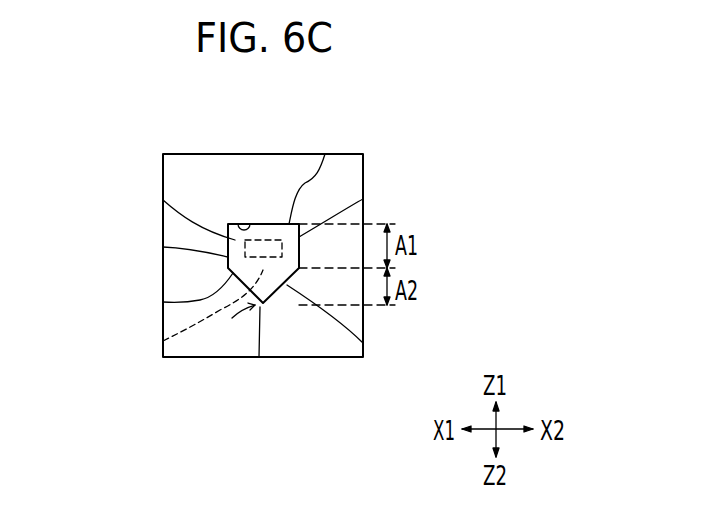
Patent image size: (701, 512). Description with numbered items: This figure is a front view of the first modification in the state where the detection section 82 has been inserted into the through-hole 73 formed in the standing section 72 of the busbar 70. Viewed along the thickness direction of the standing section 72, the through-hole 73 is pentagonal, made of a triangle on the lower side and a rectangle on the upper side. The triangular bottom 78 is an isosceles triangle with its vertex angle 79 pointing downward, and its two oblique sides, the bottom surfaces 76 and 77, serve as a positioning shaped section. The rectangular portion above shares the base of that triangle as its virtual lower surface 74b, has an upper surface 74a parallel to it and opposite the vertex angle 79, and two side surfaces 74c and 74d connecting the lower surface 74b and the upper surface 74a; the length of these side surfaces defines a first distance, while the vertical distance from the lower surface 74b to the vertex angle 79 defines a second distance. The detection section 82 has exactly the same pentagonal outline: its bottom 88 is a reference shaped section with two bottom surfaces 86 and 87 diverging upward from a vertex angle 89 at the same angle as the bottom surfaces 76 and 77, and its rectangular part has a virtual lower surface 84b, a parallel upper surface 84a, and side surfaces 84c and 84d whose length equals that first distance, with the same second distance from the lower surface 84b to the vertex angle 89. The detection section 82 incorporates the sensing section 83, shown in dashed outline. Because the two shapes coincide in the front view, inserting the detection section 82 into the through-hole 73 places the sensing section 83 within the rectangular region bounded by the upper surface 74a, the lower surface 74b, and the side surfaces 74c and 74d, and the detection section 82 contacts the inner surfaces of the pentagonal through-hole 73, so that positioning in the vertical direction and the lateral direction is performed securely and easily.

The busbar 70 is at (355, 172).
The standing section 72 is at (170, 168).
The through-hole 73 is at (258, 205).
The sensing section 83 is at (237, 224).
The detection section 82 is at (163, 200).
The upper surface 74a is at (347, 167).
The upper surface 84a is at (325, 154).
The lower surface 74b is at (182, 337).
The lower surface 84b is at (163, 341).
The side surface 74c is at (132, 249).
The side surface 84c is at (163, 247).
The side surface 74d is at (401, 211).
The side surface 84d is at (363, 199).
The bottom surface 76 is at (147, 298).
The bottom surface 86 is at (163, 302).
The bottom surface 77 is at (368, 335).
The bottom surface 87 is at (363, 343).
The bottom 78 is at (219, 377).
The bottom 88 is at (232, 318).
The vertex angle 79 is at (262, 379).
The vertex angle 89 is at (259, 357).